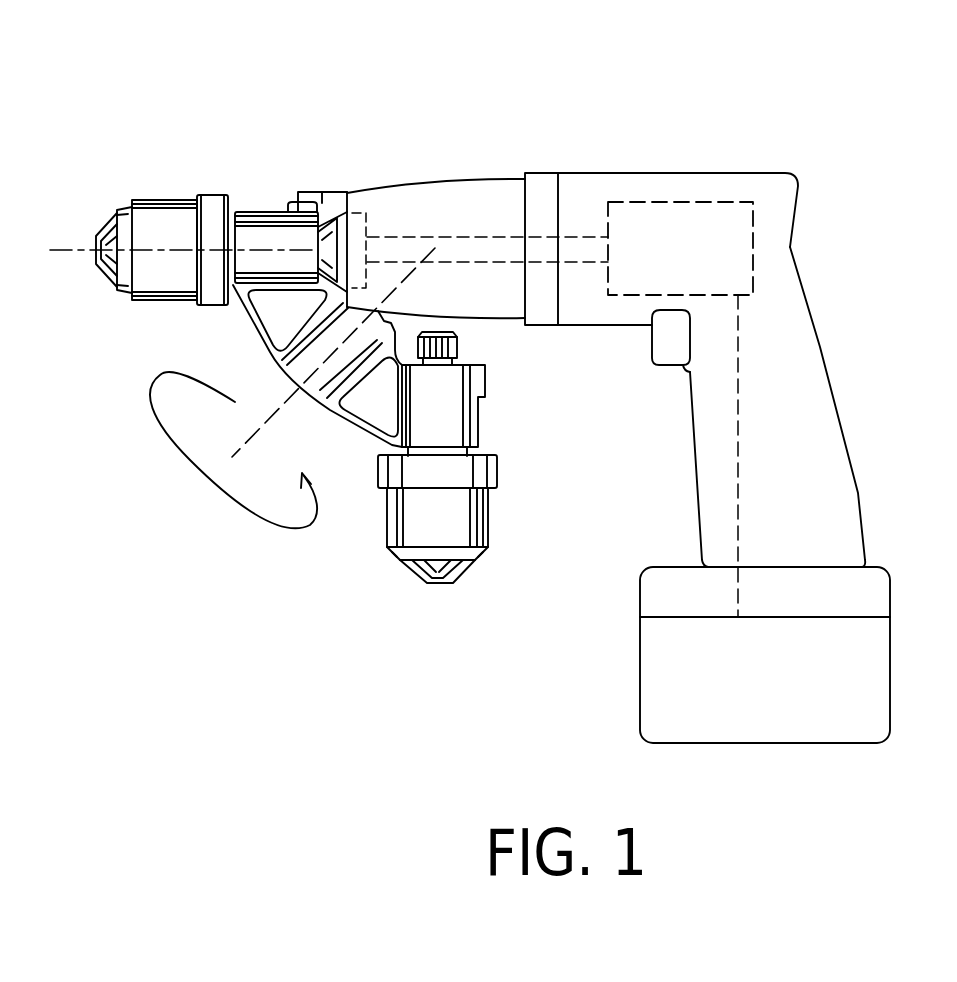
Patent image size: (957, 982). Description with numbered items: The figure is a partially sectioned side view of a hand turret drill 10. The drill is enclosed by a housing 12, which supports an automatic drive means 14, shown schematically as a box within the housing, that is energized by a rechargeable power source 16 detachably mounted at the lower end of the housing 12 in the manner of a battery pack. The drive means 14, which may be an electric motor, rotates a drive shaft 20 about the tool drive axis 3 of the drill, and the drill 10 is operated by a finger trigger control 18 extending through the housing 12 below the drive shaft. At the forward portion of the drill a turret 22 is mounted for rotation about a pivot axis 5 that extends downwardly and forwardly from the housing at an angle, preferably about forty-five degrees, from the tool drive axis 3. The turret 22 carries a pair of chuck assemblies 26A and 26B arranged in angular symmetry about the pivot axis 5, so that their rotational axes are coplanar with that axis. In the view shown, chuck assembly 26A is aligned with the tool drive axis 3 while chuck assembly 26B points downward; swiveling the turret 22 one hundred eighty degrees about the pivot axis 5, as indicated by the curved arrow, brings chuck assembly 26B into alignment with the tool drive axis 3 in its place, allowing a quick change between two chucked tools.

The hand turret drill 10 is at (765, 128).
The housing 12 is at (816, 340).
The automatic drive means 14 is at (665, 202).
The rechargeable power source 16 is at (640, 680).
The finger trigger control 18 is at (650, 362).
The drive shaft 20 is at (458, 232).
The turret 22 is at (262, 338).
The chuck assembly 26A is at (231, 177).
The chuck assembly 26B is at (506, 445).
The tool drive axis 3 is at (50, 250).
The pivot axis 5 is at (252, 437).